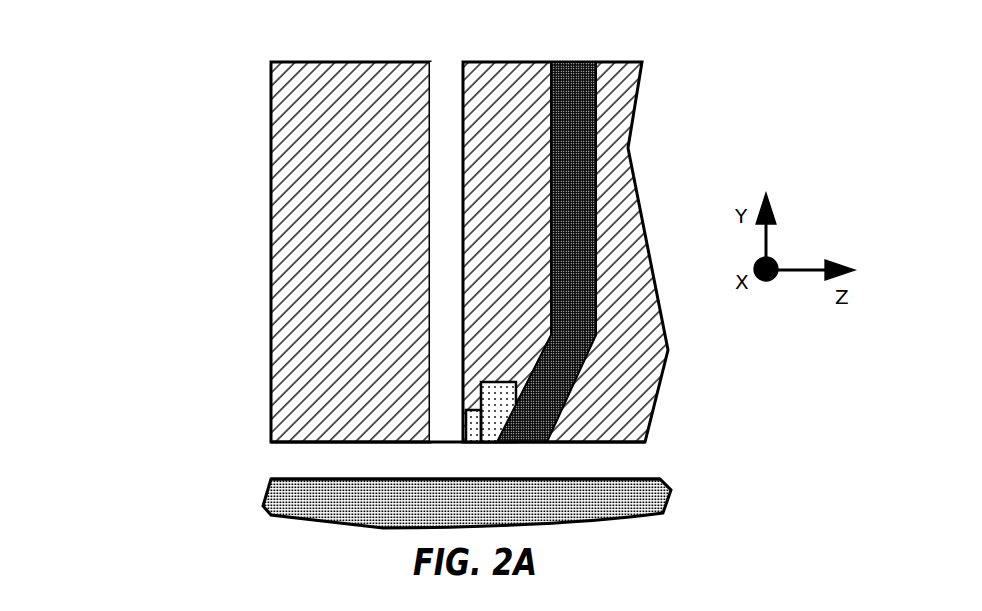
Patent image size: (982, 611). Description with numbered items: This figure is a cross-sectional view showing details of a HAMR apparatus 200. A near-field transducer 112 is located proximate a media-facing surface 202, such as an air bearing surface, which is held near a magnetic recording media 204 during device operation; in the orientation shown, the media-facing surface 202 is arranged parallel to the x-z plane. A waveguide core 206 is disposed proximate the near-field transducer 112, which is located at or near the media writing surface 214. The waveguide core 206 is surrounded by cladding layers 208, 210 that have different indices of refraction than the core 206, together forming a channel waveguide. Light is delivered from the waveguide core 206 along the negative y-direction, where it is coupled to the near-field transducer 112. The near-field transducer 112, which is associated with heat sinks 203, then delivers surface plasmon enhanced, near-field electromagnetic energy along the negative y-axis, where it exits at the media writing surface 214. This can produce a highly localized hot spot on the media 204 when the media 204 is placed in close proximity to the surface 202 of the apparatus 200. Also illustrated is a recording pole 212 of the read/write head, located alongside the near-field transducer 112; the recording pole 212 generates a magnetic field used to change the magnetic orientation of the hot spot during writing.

The HAMR apparatus 200 is at (176, 58).
The cladding layer 208 is at (273, 94).
The waveguide core 206 is at (457, 185).
The cladding layer 210 is at (500, 62).
The recording pole 212 is at (572, 62).
The near-field transducer 112 is at (473, 444).
The heat sink 203 is at (496, 444).
The media-facing surface 202 is at (297, 444).
The media writing surface 214 is at (632, 476).
The magnetic recording media 204 is at (658, 489).